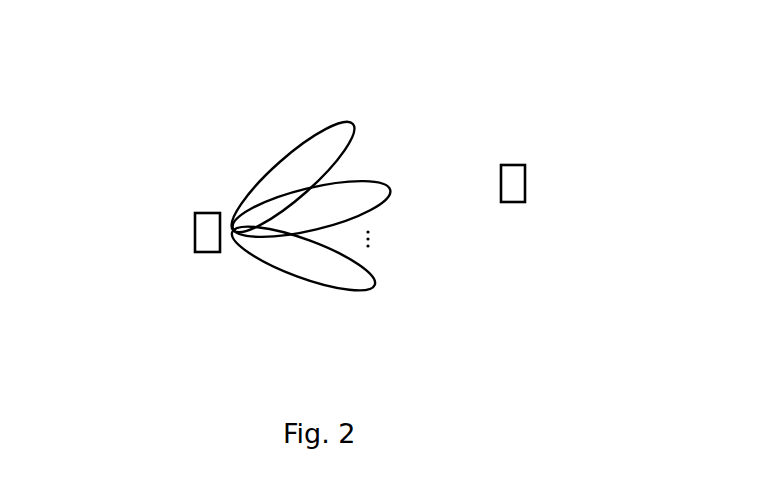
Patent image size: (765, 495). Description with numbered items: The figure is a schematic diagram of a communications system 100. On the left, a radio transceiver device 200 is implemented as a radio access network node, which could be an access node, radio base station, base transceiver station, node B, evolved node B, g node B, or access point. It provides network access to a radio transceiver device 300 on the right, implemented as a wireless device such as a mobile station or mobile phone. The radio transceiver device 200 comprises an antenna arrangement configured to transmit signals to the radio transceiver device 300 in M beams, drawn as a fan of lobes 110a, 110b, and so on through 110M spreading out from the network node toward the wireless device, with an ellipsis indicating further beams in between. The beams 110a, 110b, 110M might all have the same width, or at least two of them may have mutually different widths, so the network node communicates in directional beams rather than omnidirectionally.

The communications system 100 is at (443, 104).
The radio transceiver device 200 is at (195, 233).
The radio transceiver device 300 is at (525, 178).
The beam 110a is at (278, 162).
The beam 110b is at (382, 186).
The beam 110M is at (284, 276).